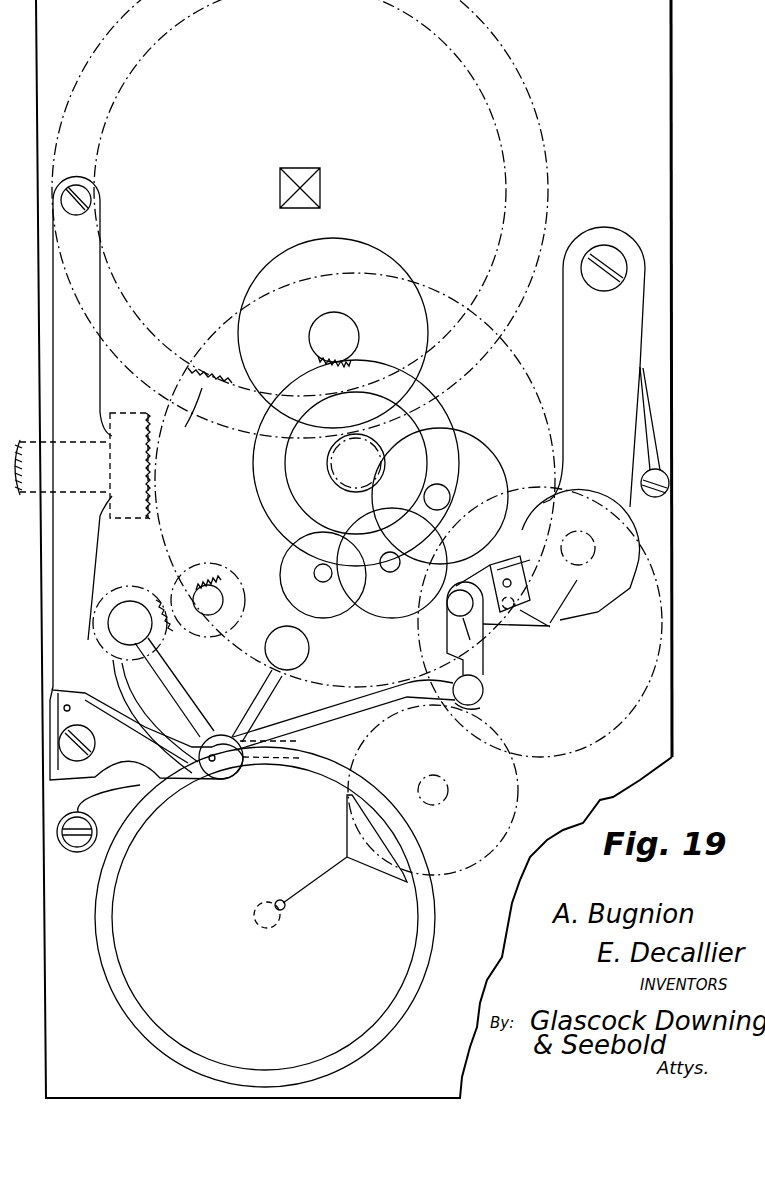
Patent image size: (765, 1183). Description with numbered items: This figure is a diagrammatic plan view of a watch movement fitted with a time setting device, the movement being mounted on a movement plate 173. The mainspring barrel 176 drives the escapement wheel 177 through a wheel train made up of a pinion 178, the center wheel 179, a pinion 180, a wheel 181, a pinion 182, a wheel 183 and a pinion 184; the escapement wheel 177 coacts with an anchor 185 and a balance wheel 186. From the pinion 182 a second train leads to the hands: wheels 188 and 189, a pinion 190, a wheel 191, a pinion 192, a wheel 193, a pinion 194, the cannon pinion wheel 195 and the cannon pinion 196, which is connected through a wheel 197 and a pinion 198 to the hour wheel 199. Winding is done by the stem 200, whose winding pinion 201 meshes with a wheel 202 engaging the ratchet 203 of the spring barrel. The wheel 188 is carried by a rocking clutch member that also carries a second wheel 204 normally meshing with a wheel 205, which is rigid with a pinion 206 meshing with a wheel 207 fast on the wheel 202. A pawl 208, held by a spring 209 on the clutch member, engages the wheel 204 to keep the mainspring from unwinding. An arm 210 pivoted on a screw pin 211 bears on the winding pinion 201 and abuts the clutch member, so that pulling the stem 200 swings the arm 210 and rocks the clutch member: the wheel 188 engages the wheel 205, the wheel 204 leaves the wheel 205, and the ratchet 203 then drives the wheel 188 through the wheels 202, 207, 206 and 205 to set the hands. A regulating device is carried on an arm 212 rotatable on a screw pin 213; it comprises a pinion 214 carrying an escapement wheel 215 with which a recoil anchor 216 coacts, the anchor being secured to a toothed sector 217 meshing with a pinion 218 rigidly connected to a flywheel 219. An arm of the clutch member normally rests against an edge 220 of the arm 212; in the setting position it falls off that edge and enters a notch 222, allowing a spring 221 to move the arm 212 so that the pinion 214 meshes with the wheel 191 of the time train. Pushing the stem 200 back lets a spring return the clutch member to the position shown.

The mainspring barrel 176 is at (524, 87).
The ratchet 203 is at (127, 300).
The center wheel 179 is at (460, 300).
The wheel 197 is at (408, 270).
The pinion 198 is at (358, 330).
The arm 210 is at (60, 280).
The screw pin 211 is at (92, 203).
The winding pinion 201 is at (110, 415).
The stem 200 is at (28, 452).
The wheel 202 is at (150, 440).
The hour wheel 199 is at (427, 393).
The cannon pinion wheel 195 is at (440, 420).
The pinion 178 is at (378, 456).
The cannon pinion 196 is at (381, 472).
The pinion 194 is at (440, 509).
The wheel 193 is at (451, 497).
The wheel 189 is at (283, 562).
The pinion 190 is at (315, 574).
The pinion 192 is at (372, 598).
The wheel 191 is at (400, 566).
The pinion 180 is at (488, 628).
The pinion 214 is at (480, 637).
The escapement wheel 215 is at (487, 650).
The notch 222 is at (487, 690).
The edge 220 is at (487, 703).
The recoil anchor 216 is at (518, 578).
The arm 212 is at (560, 622).
The toothed sector 217 is at (580, 555).
The pinion 218 is at (610, 540).
The flywheel 219 is at (630, 587).
The screw pin 213 is at (603, 255).
The spring 221 is at (665, 478).
The wheel 181 is at (650, 700).
The wheel 207 is at (112, 552).
The spring 209 is at (145, 790).
The wheel 204 is at (130, 600).
The pinion 182 is at (330, 697).
The pawl 208 is at (150, 700).
The pinion 206 is at (215, 612).
The wheel 205 is at (215, 638).
The wheel 188 is at (255, 652).
The wheel 183 is at (320, 788).
The balance wheel 186 is at (123, 983).
The anchor 185 is at (290, 905).
The pinion 184 is at (450, 790).
The escapement wheel 177 is at (510, 827).
The plate 173 is at (50, 897).